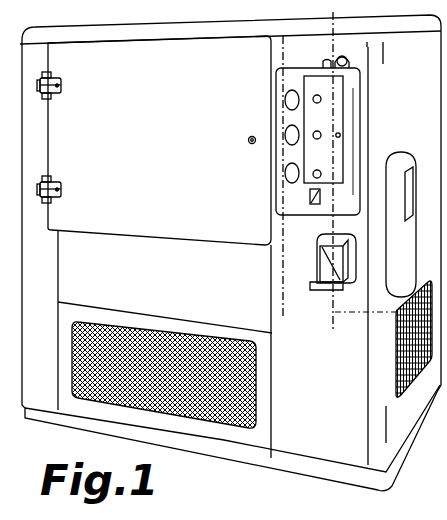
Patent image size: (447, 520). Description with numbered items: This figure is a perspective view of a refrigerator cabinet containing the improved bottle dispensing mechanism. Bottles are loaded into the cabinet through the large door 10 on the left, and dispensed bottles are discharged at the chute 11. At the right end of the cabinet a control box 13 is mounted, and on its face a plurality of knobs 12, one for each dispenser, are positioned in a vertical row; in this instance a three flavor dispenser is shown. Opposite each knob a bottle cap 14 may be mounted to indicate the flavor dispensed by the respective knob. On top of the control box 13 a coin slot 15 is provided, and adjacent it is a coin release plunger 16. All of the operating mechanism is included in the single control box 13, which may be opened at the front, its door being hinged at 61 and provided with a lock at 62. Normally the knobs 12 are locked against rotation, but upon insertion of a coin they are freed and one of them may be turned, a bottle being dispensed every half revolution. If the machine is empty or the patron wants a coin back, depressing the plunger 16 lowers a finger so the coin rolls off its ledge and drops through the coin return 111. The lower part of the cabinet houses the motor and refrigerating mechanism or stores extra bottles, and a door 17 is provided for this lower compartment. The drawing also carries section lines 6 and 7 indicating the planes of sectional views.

The door 10 is at (107, 223).
The chute 11 is at (320, 265).
The knobs 12 is at (287, 133).
The control box 13 is at (352, 103).
The bottle cap 14 is at (321, 97).
The coin slot 15 is at (346, 58).
The coin release plunger 16 is at (329, 59).
The door 17 is at (262, 388).
The hinge 61 is at (304, 157).
The lock 62 is at (341, 135).
The coin return 111 is at (309, 200).
The section line 6- 6 is at (300, 304).
The section line 7- 7 is at (350, 323).